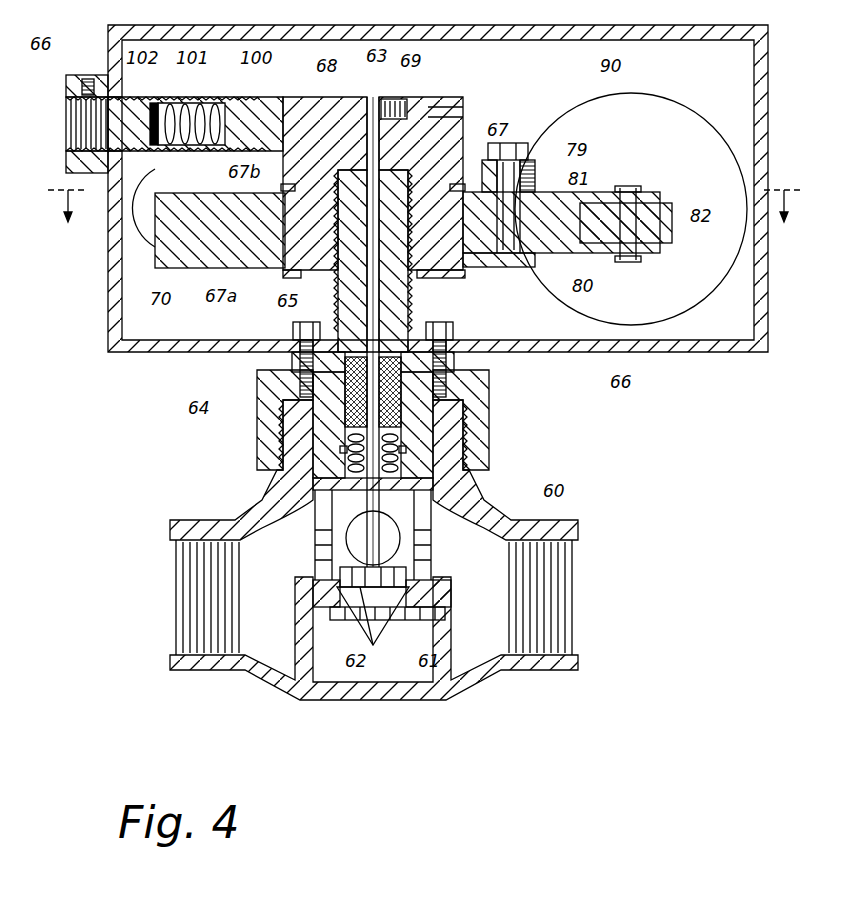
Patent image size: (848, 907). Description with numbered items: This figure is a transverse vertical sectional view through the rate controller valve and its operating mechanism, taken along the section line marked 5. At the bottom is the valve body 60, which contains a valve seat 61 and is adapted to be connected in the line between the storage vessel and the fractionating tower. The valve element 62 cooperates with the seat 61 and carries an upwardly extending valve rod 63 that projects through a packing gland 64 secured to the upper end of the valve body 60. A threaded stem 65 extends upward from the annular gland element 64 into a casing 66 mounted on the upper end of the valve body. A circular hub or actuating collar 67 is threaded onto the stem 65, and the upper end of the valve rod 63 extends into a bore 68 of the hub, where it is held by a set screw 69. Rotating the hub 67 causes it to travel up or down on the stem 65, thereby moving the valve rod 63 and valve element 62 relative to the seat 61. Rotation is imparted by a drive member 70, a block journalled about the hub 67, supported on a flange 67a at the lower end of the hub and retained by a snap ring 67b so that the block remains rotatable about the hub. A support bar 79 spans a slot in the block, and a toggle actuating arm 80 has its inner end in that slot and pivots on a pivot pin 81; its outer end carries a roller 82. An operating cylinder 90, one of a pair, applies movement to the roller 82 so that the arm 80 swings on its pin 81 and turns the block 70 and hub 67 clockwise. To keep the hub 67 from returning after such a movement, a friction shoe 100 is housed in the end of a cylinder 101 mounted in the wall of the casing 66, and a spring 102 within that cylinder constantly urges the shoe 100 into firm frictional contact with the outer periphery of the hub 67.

The section line 5- 5 is at (426, 224).
The valve body 60 is at (485, 506).
The valve seat 61 is at (413, 612).
The valve element 62 is at (372, 630).
The valve rod 63 is at (373, 97).
The packing gland 64 is at (290, 410).
The threaded stem 65 is at (338, 296).
The casing 66 is at (56, 46).
The hub or actuating collar 67 is at (442, 145).
The flange 67a is at (283, 275).
The snap ring 67b is at (281, 187).
The bore 68 is at (352, 106).
The set screw 69 is at (392, 100).
The drive member 70 is at (183, 250).
The support bar 79 is at (530, 170).
The toggle actuating arm 80 is at (568, 256).
The pivot pin 81 is at (535, 214).
The roller 82 is at (672, 216).
The operating cylinder 90 is at (647, 110).
The friction shoe 100 is at (268, 114).
The cylinder 101 is at (203, 104).
The spring 102 is at (156, 103).